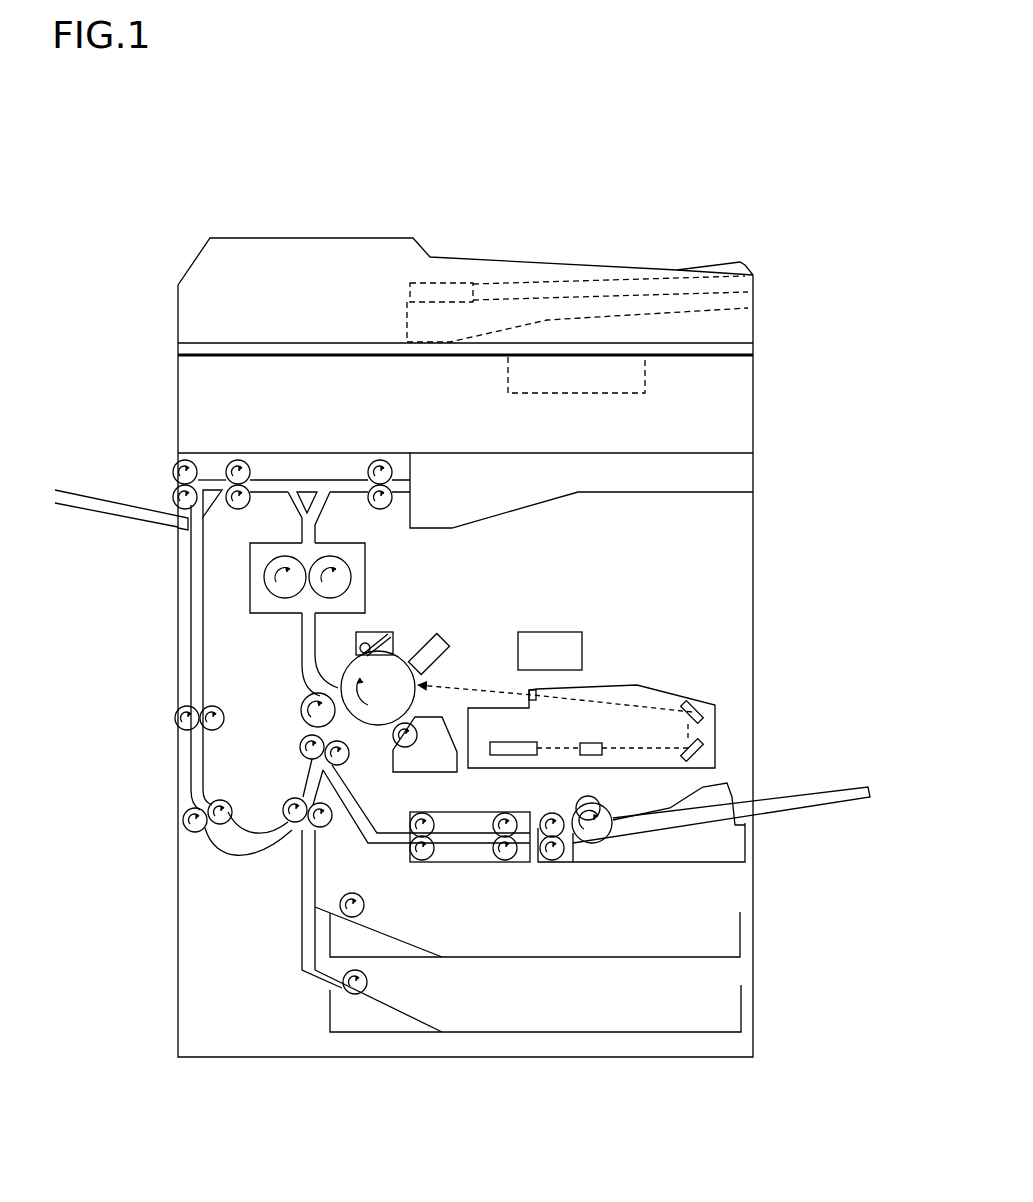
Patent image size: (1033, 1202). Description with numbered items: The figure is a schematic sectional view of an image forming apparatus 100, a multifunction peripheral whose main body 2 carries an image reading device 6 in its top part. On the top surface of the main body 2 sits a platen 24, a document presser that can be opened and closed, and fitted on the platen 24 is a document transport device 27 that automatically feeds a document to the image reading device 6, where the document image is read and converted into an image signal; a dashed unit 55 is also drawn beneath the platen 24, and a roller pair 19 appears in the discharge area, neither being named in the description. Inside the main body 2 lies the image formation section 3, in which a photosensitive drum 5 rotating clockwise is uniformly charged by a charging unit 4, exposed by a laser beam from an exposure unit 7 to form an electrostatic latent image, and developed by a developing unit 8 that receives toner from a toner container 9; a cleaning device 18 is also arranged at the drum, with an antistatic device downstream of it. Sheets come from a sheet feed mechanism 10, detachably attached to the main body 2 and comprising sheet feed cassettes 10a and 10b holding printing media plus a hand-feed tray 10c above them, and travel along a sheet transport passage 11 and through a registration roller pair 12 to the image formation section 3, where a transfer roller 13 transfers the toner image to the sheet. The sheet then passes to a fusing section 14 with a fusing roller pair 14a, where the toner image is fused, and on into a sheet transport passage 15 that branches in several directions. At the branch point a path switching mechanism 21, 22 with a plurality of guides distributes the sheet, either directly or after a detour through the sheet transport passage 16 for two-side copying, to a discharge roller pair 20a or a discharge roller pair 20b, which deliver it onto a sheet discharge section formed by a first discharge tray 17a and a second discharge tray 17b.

The image forming apparatus 100 is at (669, 232).
The main body 2 is at (755, 560).
The document transport device 27 is at (217, 270).
The platen 24 is at (755, 347).
The image reading device 6 is at (192, 410).
The scanning unit 55 is at (577, 395).
The discharge roller pair 20b is at (177, 466).
The document conveying rollers 19 is at (232, 466).
The discharge roller pair 20a is at (380, 465).
The sheet transport passage 15 is at (302, 522).
The path switching mechanism 21 is at (307, 480).
The path switching mechanism 22 is at (225, 490).
The second discharge tray 17b is at (98, 500).
The first discharge tray 17a is at (572, 490).
The fusing section 14 is at (253, 575).
The fusing roller pair 14a is at (343, 577).
The sheet transport passage 16 is at (192, 655).
The registration roller pair 12 is at (307, 760).
The sheet transport passage 11 is at (303, 852).
The photosensitive drum 5 is at (367, 713).
The cleaning device 18 is at (373, 630).
The charging unit 4 is at (440, 653).
The image formation section 3 is at (432, 614).
The transfer roller 13 is at (303, 717).
The toner container 9 is at (552, 640).
The exposure unit 7 is at (617, 697).
The developing unit 8 is at (425, 762).
The hand-feed tray 10c is at (778, 805).
The sheet feed mechanism 10 is at (767, 891).
The sheet feed cassette 10a is at (725, 942).
The sheet feed cassette 10b is at (730, 1017).